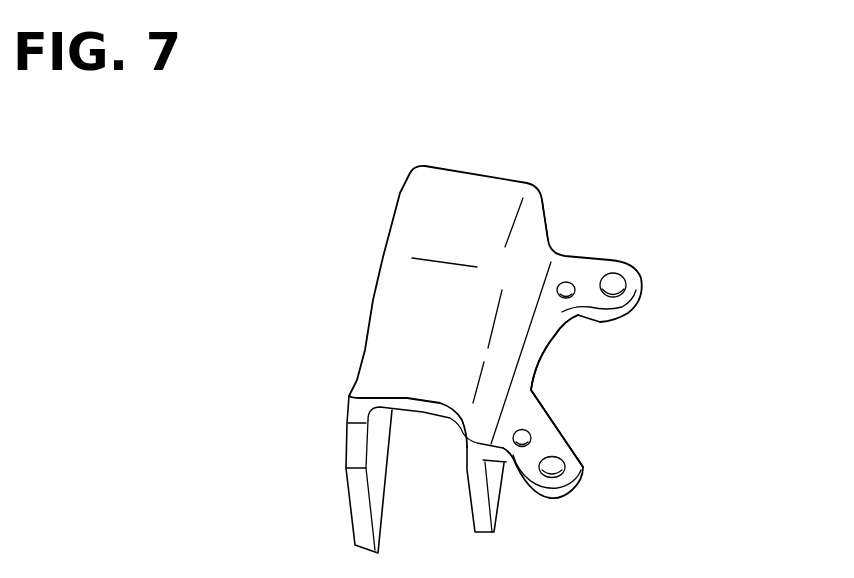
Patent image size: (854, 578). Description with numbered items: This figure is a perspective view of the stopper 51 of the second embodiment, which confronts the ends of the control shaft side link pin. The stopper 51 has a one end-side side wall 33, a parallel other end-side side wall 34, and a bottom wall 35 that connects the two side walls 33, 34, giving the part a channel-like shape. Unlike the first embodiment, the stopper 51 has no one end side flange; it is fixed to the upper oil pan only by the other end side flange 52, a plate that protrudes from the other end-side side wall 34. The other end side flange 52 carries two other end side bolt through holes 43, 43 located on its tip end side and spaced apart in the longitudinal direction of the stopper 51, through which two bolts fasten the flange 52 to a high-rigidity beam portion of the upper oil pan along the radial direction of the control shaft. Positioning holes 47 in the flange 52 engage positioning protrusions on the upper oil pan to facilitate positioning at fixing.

The stopper 51 is at (514, 162).
The bottom wall 35 is at (467, 193).
The one end-side side wall 33 is at (378, 507).
The other end-side side wall 34 is at (497, 508).
The other end side bolt through hole 43 is at (626, 283).
The positioning hole 47 is at (568, 288).
The other end side flange 52 is at (562, 312).